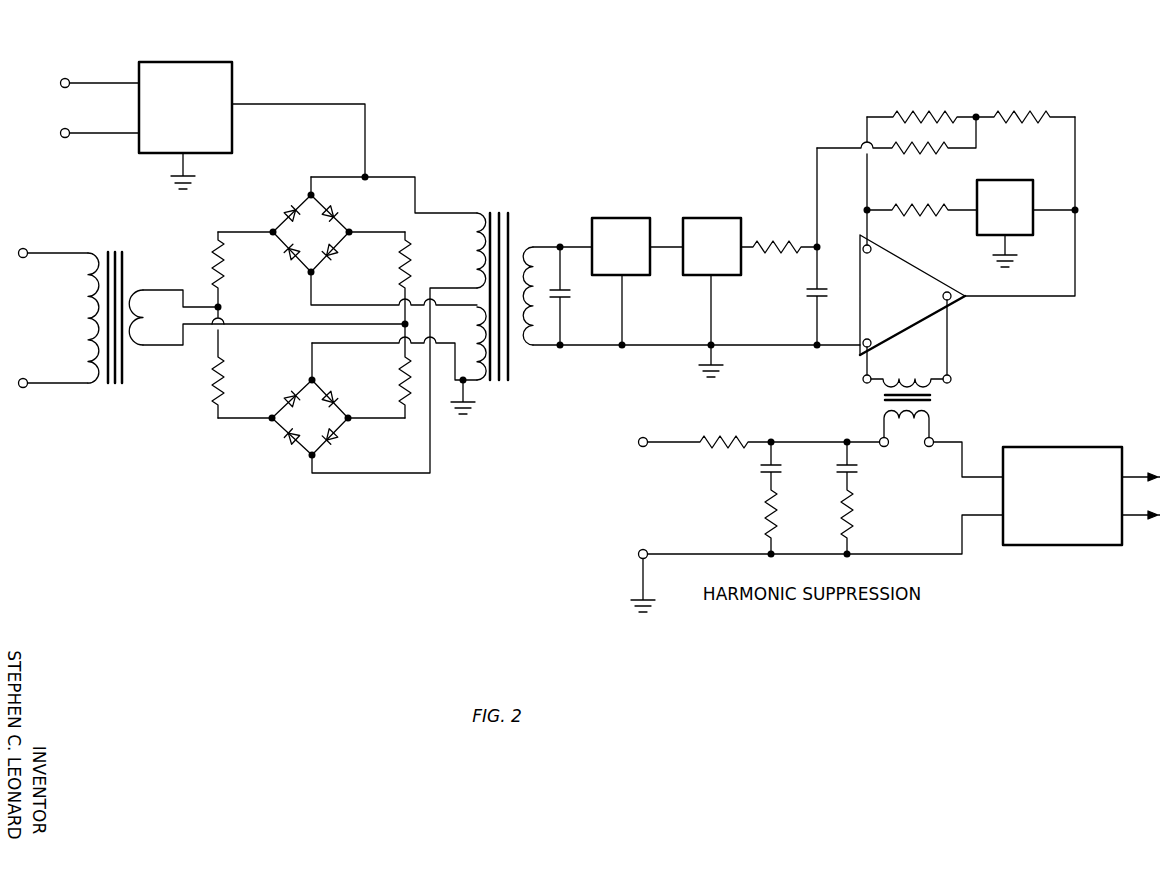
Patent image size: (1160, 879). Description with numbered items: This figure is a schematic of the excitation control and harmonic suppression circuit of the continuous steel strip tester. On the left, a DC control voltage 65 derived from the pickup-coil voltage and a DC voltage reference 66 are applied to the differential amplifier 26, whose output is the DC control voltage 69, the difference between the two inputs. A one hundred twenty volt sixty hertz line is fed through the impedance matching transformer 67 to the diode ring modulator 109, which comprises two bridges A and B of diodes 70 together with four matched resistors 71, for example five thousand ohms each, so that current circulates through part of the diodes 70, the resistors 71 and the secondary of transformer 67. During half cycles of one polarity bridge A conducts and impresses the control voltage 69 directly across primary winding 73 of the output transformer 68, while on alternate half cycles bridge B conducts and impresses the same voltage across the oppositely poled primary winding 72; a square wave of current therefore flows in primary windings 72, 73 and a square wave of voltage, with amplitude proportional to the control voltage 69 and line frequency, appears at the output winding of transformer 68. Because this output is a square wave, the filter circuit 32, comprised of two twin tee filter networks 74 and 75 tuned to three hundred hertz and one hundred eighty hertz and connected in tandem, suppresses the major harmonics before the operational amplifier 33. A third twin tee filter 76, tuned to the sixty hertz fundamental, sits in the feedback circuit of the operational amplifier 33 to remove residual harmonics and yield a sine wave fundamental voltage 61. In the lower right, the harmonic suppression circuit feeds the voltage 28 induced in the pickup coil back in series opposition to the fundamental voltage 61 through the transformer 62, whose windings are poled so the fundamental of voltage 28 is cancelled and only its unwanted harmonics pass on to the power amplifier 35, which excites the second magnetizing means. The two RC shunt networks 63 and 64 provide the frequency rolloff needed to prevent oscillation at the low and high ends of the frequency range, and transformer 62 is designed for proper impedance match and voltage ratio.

The differential amplifier 26 is at (176, 120).
The DC control voltage 65 is at (68, 79).
The DC voltage reference 66 is at (62, 137).
The impedance matching transformer 67 is at (107, 390).
The output transformer 68 is at (488, 388).
The DC control voltage 69 is at (366, 170).
The diodes 70 is at (293, 192).
The resistors 71 is at (224, 270).
The primary winding 72 is at (483, 258).
The primary winding 73 is at (483, 340).
The twin tee filter network 74 is at (611, 258).
The twin tee filter network 75 is at (702, 258).
The twin tee filter 76 is at (995, 218).
The filter circuit 32 is at (696, 262).
The operational amplifier 33 is at (884, 306).
The fundamental voltage 61 is at (924, 372).
The transformer 62 is at (883, 400).
The RC shunt network 63 is at (775, 494).
The RC shunt network 64 is at (851, 494).
The voltage 28 is at (642, 437).
The power amplifier 35 is at (1051, 507).
The diode ring modulator 109 is at (328, 334).